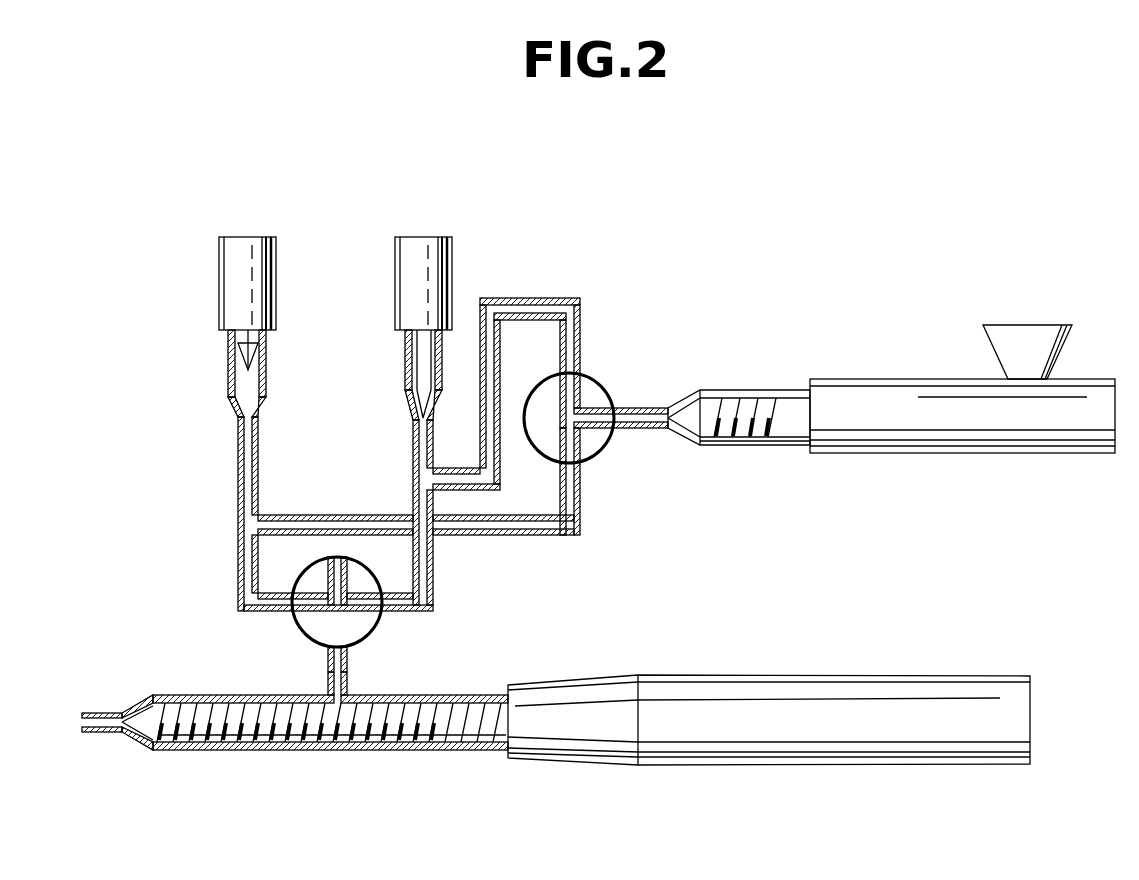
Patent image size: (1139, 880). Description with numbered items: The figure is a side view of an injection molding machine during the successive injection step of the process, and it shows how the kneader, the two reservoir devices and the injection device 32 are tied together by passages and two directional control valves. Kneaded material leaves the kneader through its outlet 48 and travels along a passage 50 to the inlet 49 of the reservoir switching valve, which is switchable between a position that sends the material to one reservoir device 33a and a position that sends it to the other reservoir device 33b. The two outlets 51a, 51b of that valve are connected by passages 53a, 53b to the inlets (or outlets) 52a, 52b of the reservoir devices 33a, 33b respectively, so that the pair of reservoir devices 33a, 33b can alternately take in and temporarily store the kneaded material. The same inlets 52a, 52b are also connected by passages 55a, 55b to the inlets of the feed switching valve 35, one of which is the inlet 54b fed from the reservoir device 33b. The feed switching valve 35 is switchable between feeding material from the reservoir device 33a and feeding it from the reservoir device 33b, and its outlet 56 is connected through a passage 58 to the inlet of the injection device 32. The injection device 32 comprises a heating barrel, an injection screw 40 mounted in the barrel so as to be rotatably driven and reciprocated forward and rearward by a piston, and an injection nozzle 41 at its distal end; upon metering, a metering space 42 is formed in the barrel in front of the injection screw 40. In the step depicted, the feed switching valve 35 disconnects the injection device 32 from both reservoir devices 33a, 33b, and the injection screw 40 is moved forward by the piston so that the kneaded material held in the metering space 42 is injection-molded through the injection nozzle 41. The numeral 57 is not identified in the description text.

The injection device 32 is at (782, 664).
The reservoir device 33a is at (424, 222).
The reservoir device 33b is at (250, 222).
The feed switching means 35 is at (382, 636).
The injection screw 40 is at (330, 750).
The injection nozzle 41 is at (99, 735).
The metering space 42 is at (140, 750).
The outlet of the kneader 48 is at (670, 408).
The inlet of the switching valve 49 is at (630, 430).
The passage 50 is at (641, 403).
The outlet of the switching valve 51a is at (578, 372).
The outlet of the switching valve 51b is at (582, 478).
The inlet of the reservoir device 52a is at (422, 426).
The inlet of the reservoir device 52b is at (238, 413).
The passage 53a is at (530, 297).
The passage 53b is at (470, 537).
The inlet of the switching valve 54b is at (262, 595).
The passage 55a is at (420, 467).
The passage 55b is at (245, 477).
The outlet of the switching valve 56 is at (328, 660).
The passage wall 57 is at (345, 681).
The passage 58 is at (330, 680).